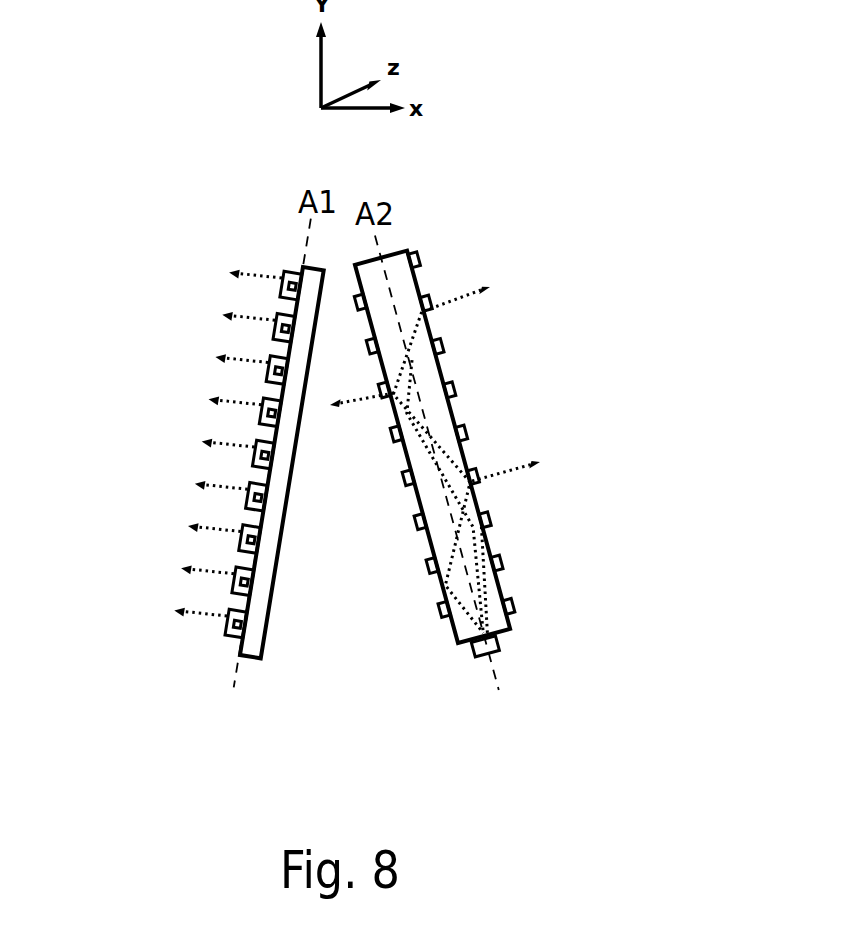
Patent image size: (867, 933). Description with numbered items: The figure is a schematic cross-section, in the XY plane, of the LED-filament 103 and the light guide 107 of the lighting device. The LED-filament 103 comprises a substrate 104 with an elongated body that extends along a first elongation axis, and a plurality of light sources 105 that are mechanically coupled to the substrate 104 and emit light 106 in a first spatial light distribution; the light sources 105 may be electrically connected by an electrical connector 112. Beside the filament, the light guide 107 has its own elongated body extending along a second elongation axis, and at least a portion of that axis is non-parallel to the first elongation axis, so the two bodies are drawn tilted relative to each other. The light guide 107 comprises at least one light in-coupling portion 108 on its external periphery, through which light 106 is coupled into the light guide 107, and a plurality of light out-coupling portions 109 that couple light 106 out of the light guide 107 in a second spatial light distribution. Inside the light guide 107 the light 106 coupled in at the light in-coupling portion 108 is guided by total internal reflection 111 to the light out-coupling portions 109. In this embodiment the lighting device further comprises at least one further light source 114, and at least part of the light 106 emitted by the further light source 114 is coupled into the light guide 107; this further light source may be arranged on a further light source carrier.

The LED-filament 103 is at (249, 220).
The substrate 104 is at (262, 608).
The light sources 105 is at (247, 560).
The light 106 is at (253, 292).
The light guide 107 is at (466, 251).
The light in-coupling portion 108 is at (472, 655).
The light out-coupling portions 109 is at (440, 350).
The total internal reflection 111 is at (485, 547).
The electrical connector 112 is at (253, 483).
The further light source 114 is at (512, 630).